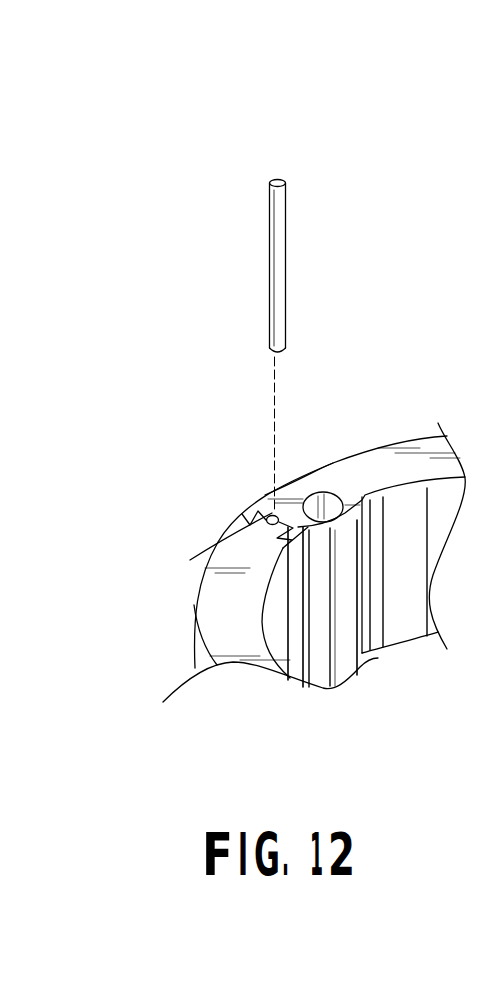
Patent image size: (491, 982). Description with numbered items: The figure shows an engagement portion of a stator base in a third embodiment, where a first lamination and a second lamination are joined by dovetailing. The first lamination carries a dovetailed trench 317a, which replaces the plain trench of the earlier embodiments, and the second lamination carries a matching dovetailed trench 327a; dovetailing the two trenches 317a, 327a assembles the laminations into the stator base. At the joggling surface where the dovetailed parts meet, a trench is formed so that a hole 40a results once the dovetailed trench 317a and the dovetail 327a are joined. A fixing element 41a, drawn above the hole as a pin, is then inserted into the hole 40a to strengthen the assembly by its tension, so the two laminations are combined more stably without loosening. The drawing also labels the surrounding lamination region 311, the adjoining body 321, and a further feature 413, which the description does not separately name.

The fixing element 41a is at (284, 226).
The ring member 311 is at (410, 438).
The dovetailed trench 317a is at (307, 497).
The hole 40a is at (270, 513).
The dovetailed trench 327a is at (257, 512).
The edge 413 is at (240, 550).
The ring body 321 is at (186, 594).